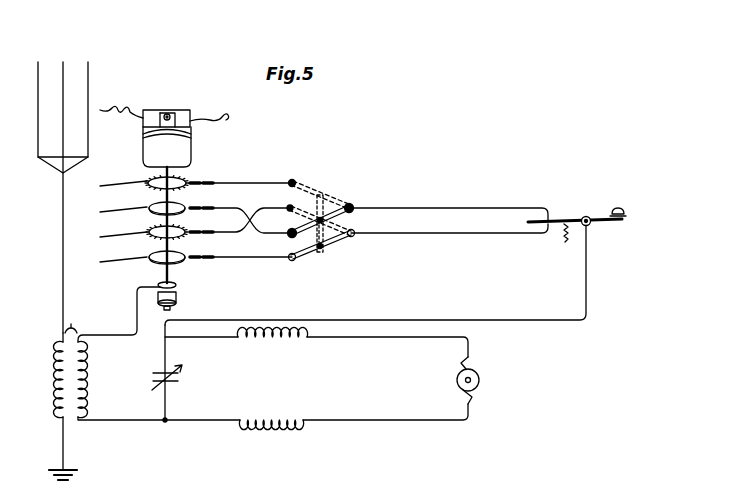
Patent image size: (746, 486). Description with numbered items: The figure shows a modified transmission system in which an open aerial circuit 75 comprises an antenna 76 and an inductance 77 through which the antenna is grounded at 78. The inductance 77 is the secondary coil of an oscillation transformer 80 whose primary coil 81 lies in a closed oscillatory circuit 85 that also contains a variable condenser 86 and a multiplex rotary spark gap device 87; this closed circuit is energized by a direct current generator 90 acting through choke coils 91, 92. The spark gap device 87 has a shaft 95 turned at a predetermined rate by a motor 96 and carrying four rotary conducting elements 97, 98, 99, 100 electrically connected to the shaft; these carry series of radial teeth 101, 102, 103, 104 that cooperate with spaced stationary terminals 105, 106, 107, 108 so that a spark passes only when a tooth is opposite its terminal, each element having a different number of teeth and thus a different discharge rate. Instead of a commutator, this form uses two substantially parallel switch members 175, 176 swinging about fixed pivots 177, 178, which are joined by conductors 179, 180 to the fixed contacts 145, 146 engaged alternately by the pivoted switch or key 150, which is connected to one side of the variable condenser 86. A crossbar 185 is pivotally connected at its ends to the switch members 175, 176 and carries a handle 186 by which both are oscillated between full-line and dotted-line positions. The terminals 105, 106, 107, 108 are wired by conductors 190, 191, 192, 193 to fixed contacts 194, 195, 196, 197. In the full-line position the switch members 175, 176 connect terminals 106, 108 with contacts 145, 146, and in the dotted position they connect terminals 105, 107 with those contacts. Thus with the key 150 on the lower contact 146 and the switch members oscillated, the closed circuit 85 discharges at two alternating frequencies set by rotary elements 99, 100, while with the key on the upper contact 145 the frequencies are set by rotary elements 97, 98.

The open aerial circuit 75 is at (60, 177).
The antenna 76 is at (63, 231).
The inductance 77 is at (55, 368).
The ground 78 is at (58, 470).
The oscillation transformer 80 is at (76, 321).
The primary coil 81 is at (88, 360).
The closed oscillatory circuit 85 is at (115, 377).
The variable condenser 86 is at (180, 380).
The multiplex rotary spark gap device 87 is at (167, 110).
The direct current generator 90 is at (480, 382).
The choke coil 91 is at (316, 346).
The choke coil 92 is at (316, 412).
The shaft 95 is at (176, 275).
The motor 96 is at (143, 146).
The rotary conducting element 97 is at (148, 181).
The rotary conducting element 98 is at (149, 207).
The rotary conducting element 99 is at (149, 231).
The rotary conducting element 100 is at (149, 256).
The radial teeth 101 is at (109, 187).
The radial teeth 102 is at (109, 212).
The radial teeth 103 is at (109, 237).
The radial teeth 104 is at (109, 262).
The stationary terminal 105 is at (206, 174).
The stationary terminal 106 is at (206, 199).
The stationary terminal 107 is at (206, 223).
The stationary terminal 108 is at (206, 248).
The fixed contact 145 is at (553, 211).
The fixed contact 146 is at (550, 228).
The switch or key 150 is at (587, 216).
The switch member 175 is at (322, 205).
The switch member 176 is at (323, 249).
The pivot 177 is at (352, 206).
The pivot 178 is at (355, 236).
The conductor 179 is at (448, 205).
The conductor 180 is at (449, 239).
The crossbar 185 is at (319, 254).
The handle 186 is at (316, 252).
The conductor 190 is at (252, 172).
The conductor 191 is at (230, 205).
The conductor 192 is at (233, 235).
The conductor 193 is at (236, 260).
The fixed contact 194 is at (293, 180).
The fixed contact 195 is at (290, 236).
The fixed contact 196 is at (288, 206).
The fixed contact 197 is at (290, 259).